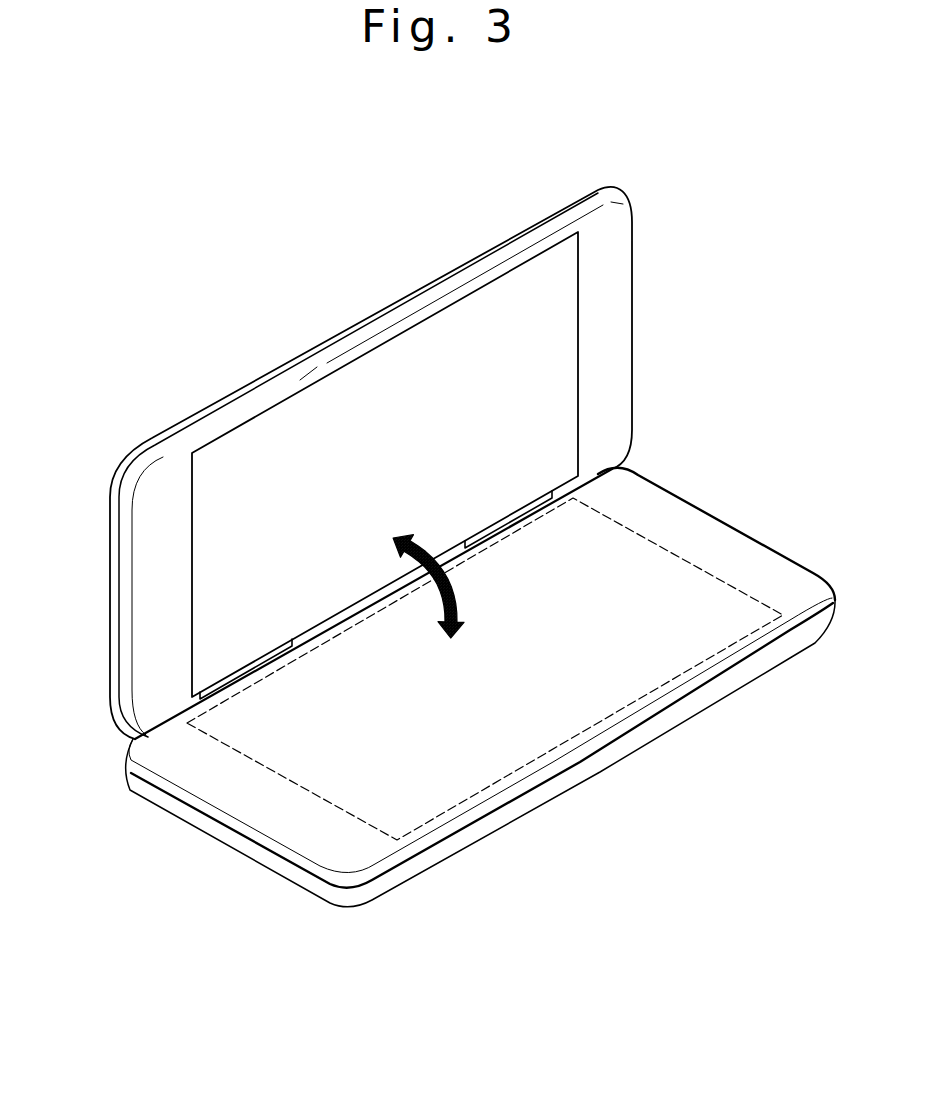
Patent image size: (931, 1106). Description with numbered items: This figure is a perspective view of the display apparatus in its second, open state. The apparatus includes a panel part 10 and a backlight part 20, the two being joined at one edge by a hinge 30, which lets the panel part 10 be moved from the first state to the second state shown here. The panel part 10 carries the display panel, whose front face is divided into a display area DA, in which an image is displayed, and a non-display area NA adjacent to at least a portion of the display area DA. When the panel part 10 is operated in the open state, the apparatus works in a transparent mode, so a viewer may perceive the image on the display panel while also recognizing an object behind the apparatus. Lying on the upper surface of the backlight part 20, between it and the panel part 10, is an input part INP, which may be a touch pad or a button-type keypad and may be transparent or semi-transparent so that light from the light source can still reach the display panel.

The panel part 10 is at (230, 386).
The backlight part 20 is at (636, 763).
The hinge 30 is at (258, 672).
The non-display area NA is at (609, 299).
The display area DA is at (557, 371).
The input part INP is at (690, 583).